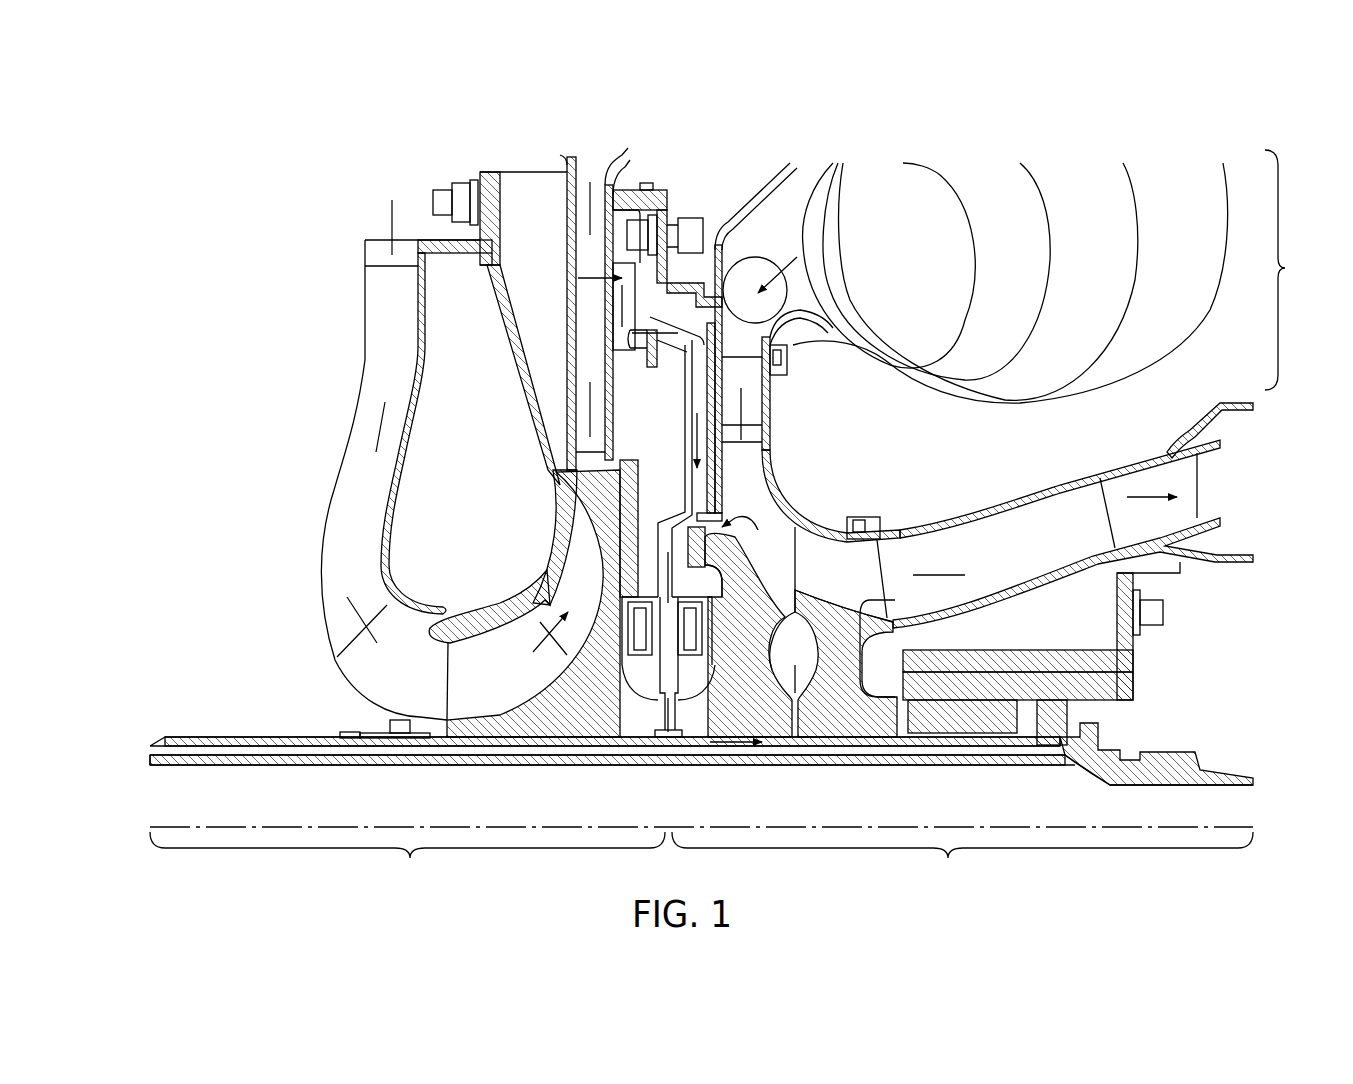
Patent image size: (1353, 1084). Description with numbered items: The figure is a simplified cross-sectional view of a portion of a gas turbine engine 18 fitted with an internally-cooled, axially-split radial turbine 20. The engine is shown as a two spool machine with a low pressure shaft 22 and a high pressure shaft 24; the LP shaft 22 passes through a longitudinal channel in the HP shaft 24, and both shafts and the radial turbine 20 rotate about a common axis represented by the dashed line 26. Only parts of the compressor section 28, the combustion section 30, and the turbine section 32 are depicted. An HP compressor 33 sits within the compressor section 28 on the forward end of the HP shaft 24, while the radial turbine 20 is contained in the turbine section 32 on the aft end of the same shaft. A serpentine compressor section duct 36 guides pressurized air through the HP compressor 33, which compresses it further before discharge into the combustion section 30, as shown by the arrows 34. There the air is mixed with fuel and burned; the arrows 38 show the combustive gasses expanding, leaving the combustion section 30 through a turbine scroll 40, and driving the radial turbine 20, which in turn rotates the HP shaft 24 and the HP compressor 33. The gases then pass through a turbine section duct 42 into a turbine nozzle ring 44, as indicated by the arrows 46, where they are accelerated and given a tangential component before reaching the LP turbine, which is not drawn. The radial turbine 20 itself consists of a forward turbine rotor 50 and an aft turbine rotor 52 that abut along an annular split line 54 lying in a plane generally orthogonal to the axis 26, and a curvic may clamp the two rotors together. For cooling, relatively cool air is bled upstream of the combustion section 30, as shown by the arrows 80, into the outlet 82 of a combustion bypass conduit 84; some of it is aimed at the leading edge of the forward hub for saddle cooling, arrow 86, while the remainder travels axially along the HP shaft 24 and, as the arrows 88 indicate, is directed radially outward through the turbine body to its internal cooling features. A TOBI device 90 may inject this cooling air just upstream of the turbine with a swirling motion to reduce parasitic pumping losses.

The gas turbine engine 18 is at (223, 252).
The axially-split radial turbine 20 is at (818, 523).
The low pressure shaft 22 is at (230, 770).
The high pressure shaft 24 is at (240, 740).
The rotational axis 26 is at (362, 825).
The compressor section 28 is at (407, 861).
The combustion section 30 is at (1290, 270).
The turbine section 32 is at (962, 861).
The HP compressor 33 is at (353, 670).
The arrows 34 is at (392, 214).
The compressor section duct 36 is at (335, 490).
The arrows 38 is at (780, 262).
The turbine scroll 40 is at (945, 188).
The turbine section duct 42 is at (1012, 515).
The turbine nozzle ring 44 is at (1110, 478).
The arrows 46 is at (933, 560).
The forward turbine rotor 50 is at (752, 690).
The aft turbine rotor 52 is at (852, 690).
The split line 54 is at (797, 590).
The arrows 80 is at (593, 290).
The outlet 82 is at (580, 270).
The combustion bypass conduit 84 is at (705, 480).
The arrow 86 is at (748, 538).
The arrows 88 is at (658, 573).
The TOBI device 90 is at (650, 680).